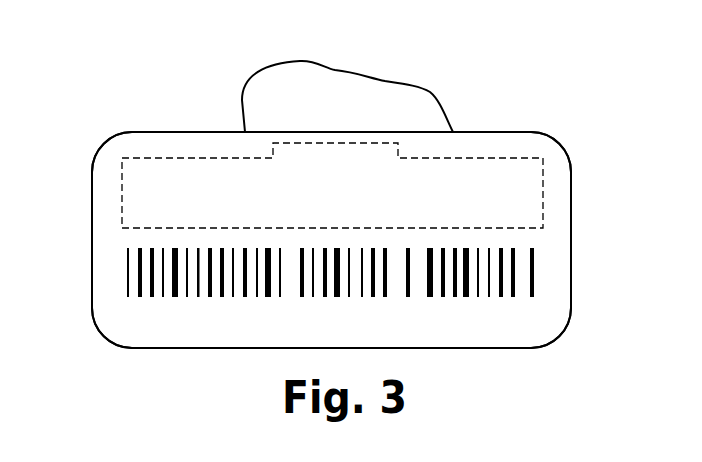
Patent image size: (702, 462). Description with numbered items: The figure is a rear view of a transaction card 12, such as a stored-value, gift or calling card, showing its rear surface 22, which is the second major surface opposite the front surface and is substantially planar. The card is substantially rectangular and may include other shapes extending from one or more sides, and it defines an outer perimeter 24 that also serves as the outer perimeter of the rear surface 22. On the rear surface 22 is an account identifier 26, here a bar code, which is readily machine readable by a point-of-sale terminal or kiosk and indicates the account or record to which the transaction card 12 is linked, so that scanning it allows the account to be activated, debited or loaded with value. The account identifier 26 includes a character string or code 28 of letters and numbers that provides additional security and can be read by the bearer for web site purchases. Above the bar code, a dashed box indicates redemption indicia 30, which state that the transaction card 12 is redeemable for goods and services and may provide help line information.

The transaction card 12 is at (97, 58).
The rear surface 22 is at (553, 200).
The outer perimeter 24 is at (440, 106).
The account identifier 26 is at (535, 268).
The character string or code 28 is at (537, 318).
The redemption indicia 30 is at (122, 193).